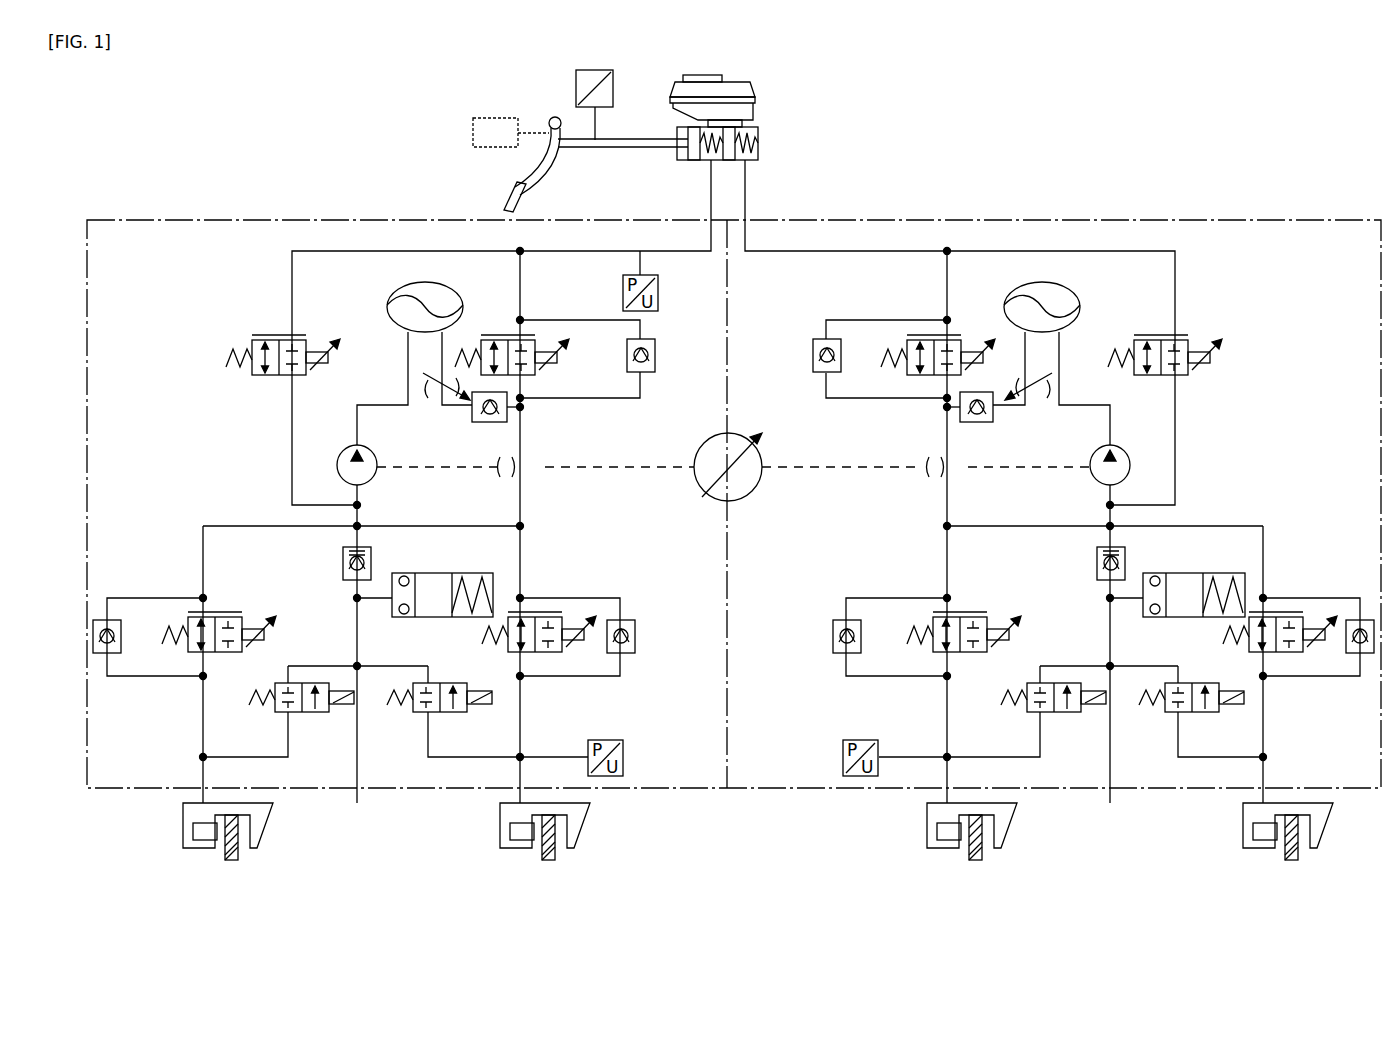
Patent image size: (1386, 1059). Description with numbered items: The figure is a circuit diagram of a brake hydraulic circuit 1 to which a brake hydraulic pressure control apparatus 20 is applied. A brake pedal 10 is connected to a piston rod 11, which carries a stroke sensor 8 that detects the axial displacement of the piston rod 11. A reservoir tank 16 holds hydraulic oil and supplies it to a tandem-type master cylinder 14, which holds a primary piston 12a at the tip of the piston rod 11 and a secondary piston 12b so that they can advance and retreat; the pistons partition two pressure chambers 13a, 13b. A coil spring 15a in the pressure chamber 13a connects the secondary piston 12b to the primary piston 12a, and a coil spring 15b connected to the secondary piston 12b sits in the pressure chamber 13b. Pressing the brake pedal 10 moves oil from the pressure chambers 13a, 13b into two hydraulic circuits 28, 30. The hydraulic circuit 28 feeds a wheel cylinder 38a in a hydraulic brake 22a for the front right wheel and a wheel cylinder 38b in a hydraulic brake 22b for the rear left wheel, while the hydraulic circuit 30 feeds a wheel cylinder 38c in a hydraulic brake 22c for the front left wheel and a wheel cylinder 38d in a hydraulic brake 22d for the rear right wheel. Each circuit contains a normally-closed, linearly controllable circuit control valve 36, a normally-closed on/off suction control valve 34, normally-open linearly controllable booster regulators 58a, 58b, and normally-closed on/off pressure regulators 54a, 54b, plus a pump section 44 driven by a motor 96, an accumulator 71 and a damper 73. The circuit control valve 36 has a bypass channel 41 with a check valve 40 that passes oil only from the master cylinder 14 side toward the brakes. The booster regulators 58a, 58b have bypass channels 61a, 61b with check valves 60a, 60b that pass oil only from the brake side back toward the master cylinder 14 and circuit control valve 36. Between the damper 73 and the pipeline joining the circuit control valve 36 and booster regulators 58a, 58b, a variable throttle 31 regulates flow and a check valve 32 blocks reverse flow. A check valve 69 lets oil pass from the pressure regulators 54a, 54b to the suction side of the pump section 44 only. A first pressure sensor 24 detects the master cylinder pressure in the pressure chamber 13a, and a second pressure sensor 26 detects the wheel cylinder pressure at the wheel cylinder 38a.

The brake hydraulic circuit 1 is at (992, 102).
The stroke sensor 8 is at (576, 95).
The brake pedal 10 is at (512, 189).
The piston rod 11 is at (607, 148).
The primary piston 12a is at (688, 160).
The secondary piston 12b is at (738, 163).
The pressure chamber 13a is at (702, 162).
The pressure chamber 13b is at (757, 160).
The master cylinder 14 is at (758, 130).
The coil spring 15a is at (690, 135).
The coil spring 15b is at (762, 145).
The reservoir tank 16 is at (680, 95).
The brake hydraulic pressure control apparatus 20 is at (1122, 220).
The first pressure sensor 24 is at (658, 294).
The second pressure sensor 26 is at (623, 754).
The hydraulic circuit 28 is at (396, 237).
The hydraulic circuit 30 is at (962, 237).
The variable throttle 31 is at (438, 400).
The check valve 32 is at (489, 422).
The suction control valve 34 is at (298, 345).
The circuit control valve 36 is at (476, 341).
The wheel cylinder 38a is at (518, 840).
The wheel cylinder 38b is at (198, 840).
The wheel cylinder 38c is at (945, 840).
The wheel cylinder 38d is at (1260, 840).
The hydraulic brake 22a is at (537, 860).
The hydraulic brake 22b is at (220, 860).
The hydraulic brake 22c is at (964, 860).
The hydraulic brake 22d is at (1280, 860).
The check valve 40 is at (655, 356).
The bypass channel 41 is at (564, 318).
The pump section 44 is at (373, 451).
The pressure regulator 54a is at (468, 710).
The pressure regulator 54b is at (274, 708).
The booster regulator 58a is at (506, 640).
The booster regulator 58b is at (186, 640).
The check valve 60a is at (633, 637).
The check valve 60b is at (108, 639).
The bypass channel 61a is at (561, 600).
The bypass channel 61b is at (151, 600).
The check valve 69 is at (370, 558).
The accumulator 71 is at (447, 574).
The damper 73 is at (389, 304).
The motor 96 is at (754, 488).